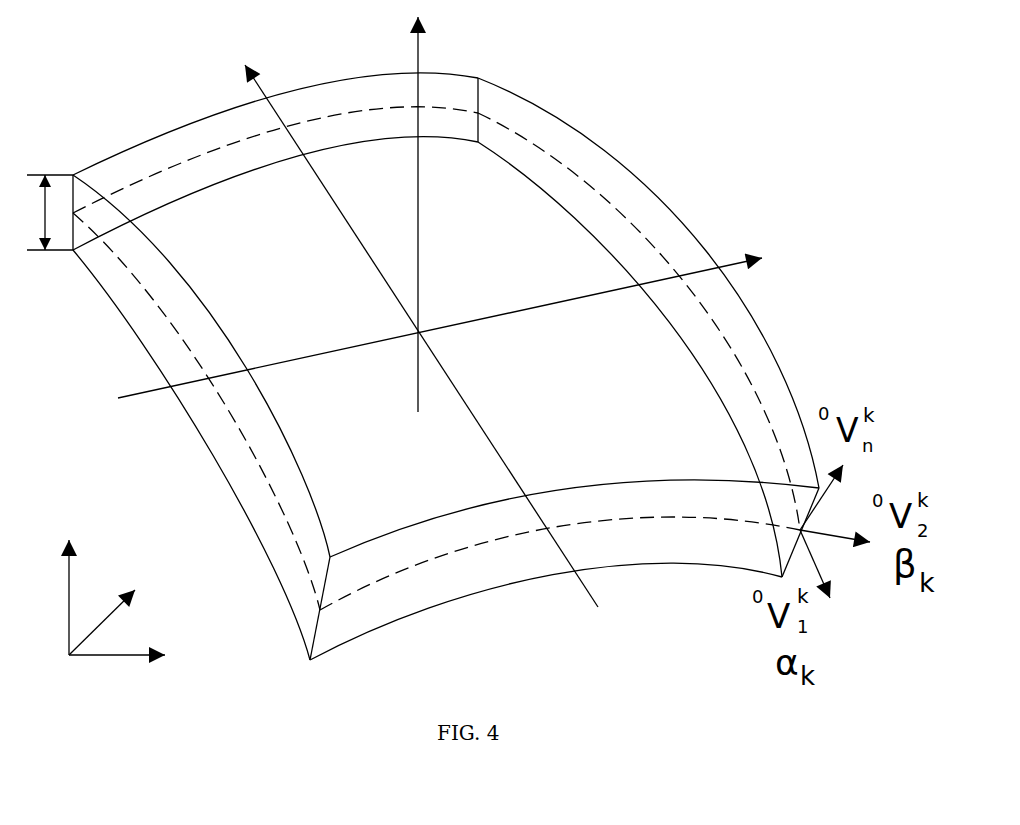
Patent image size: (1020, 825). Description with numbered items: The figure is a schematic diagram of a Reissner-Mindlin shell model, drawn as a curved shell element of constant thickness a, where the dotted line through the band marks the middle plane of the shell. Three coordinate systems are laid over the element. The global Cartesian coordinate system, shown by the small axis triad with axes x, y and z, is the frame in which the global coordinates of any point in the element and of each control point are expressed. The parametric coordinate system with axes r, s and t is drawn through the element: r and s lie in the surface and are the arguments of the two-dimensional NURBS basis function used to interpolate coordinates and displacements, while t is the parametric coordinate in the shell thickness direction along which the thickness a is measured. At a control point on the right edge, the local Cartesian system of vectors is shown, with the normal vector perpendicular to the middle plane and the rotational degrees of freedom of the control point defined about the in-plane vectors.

The shell thickness a is at (44, 212).
The parametric coordinate r is at (404, 322).
The parametric coordinate s is at (440, 310).
The parametric coordinate t is at (431, 206).
The global Cartesian coordinate x is at (127, 654).
The global Cartesian coordinate y is at (110, 612).
The global Cartesian coordinate z is at (55, 593).